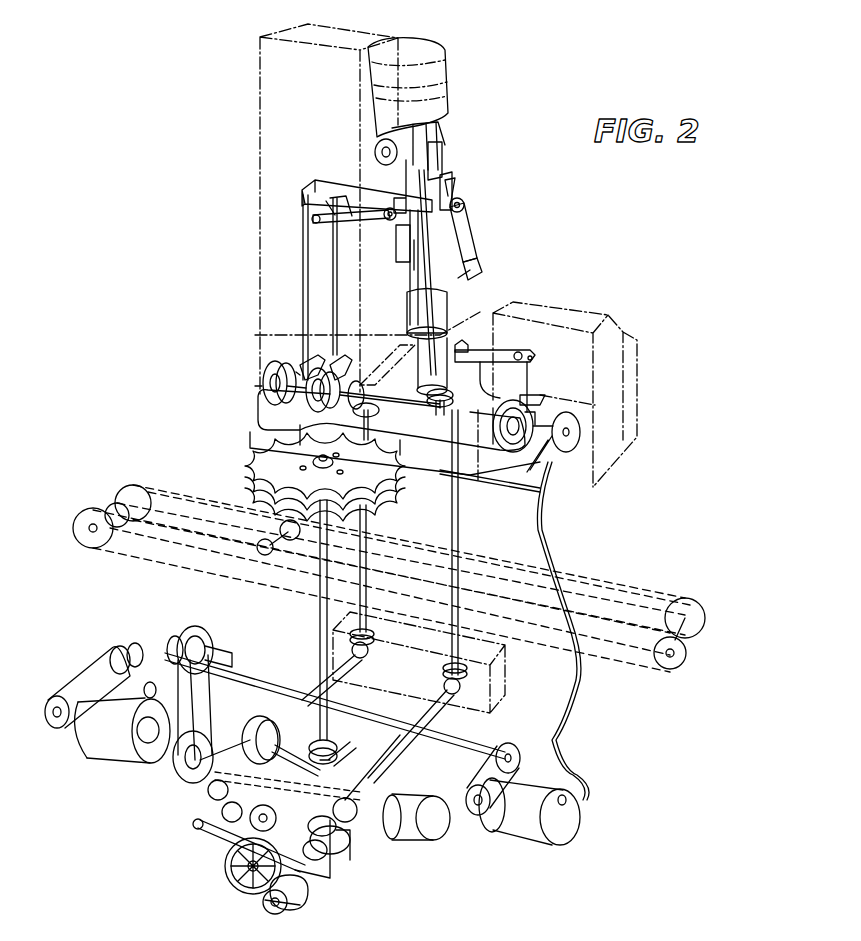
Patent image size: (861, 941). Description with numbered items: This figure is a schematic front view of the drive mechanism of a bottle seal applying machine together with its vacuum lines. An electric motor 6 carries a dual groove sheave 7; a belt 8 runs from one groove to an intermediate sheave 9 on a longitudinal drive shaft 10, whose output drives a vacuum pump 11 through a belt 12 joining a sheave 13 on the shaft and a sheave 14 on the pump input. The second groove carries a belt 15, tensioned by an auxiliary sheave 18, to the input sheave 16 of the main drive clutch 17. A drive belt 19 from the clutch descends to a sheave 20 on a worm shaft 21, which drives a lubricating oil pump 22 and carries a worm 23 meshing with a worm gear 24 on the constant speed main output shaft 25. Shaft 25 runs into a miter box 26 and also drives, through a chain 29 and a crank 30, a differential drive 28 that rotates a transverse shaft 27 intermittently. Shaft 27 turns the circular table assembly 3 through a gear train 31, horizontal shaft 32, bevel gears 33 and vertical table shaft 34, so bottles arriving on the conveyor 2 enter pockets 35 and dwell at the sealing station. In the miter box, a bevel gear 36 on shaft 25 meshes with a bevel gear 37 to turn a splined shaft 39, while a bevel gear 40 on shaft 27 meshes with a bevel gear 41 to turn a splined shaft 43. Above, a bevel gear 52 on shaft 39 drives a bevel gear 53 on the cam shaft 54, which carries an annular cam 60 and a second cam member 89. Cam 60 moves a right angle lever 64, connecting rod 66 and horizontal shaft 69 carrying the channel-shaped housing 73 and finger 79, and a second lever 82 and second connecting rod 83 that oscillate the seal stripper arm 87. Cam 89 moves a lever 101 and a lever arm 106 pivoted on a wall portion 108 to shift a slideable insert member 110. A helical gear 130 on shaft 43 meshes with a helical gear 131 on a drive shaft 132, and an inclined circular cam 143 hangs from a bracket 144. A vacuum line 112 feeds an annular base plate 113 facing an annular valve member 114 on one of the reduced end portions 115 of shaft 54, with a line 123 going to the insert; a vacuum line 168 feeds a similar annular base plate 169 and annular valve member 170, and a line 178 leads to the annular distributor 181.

The longitudinal conveyor 2 is at (700, 600).
The circular table assembly 3 is at (234, 461).
The electric motor 6 is at (105, 752).
The dual groove sheave 7 is at (52, 725).
The belt 8 is at (80, 665).
The intermediate sheave 9 is at (122, 648).
The longitudinal drive shaft 10 is at (470, 730).
The vacuum pump 11 is at (525, 828).
The belt 12 is at (470, 775).
The sheave 13 is at (515, 752).
The sheave 14 is at (473, 810).
The belt 15 is at (138, 645).
The input sheave 16 is at (175, 636).
The main drive clutch 17 is at (225, 650).
The auxiliary sheave 18 is at (145, 692).
The drive belt 19 is at (212, 705).
The sheave 20 is at (190, 780).
The worm shaft 21 is at (345, 770).
The lubricating oil pump 22 is at (415, 834).
The worm 23 is at (290, 768).
The worm gear 24 is at (248, 745).
The constant speed main output shaft 25 is at (335, 688).
The miter box 26 is at (505, 680).
The transverse shaft 27 is at (418, 712).
The differential drive 28 is at (350, 850).
The chain 29 is at (363, 818).
The crank 30 is at (212, 840).
The gear train 31 is at (232, 901).
The horizontal shaft 32 is at (276, 815).
The bevel gears 33 is at (336, 748).
The vertical table shaft 34 is at (328, 585).
The pockets 35 is at (322, 475).
The bevel gear 36 is at (368, 655).
The bevel gear 37 is at (375, 636).
The splined shaft 39 is at (370, 520).
The bevel gear 40 is at (460, 690).
The bevel gear 41 is at (465, 662).
The splined shaft 43 is at (460, 510).
The bevel gear 52 is at (372, 424).
The bevel gear 53 is at (362, 384).
The cam shaft 54 is at (385, 398).
The annular cam 60 is at (300, 434).
The right angle lever 64 is at (318, 352).
The connecting rod 66 is at (300, 268).
The horizontal shaft 69 is at (362, 185).
The channel-shaped housing 73 is at (468, 225).
The finger 79 is at (467, 284).
The second lever 82 is at (345, 352).
The second connecting rod 83 is at (346, 258).
The seal stripper arm 87 is at (352, 220).
The second cam member 89 is at (505, 403).
The lever 101 is at (540, 410).
The lever arm 106 is at (500, 350).
The wall portion 108 is at (590, 310).
The slideable insert member 110 is at (465, 342).
The vacuum line 112 is at (548, 520).
The annular base plate 113 is at (576, 428).
The annular valve member 114 is at (548, 420).
The reduced end portions 115 is at (296, 372).
The line 123 is at (505, 480).
The helical gear 130 is at (443, 420).
The helical gear 131 is at (410, 352).
The drive shaft 132 is at (430, 305).
The inclined circular cam 143 is at (440, 135).
The bracket 144 is at (443, 62).
The vacuum line 168 is at (248, 425).
The annular base plate 169 is at (262, 380).
The annular valve member 170 is at (282, 368).
The line 178 is at (408, 460).
The annular distributor 181 is at (385, 348).